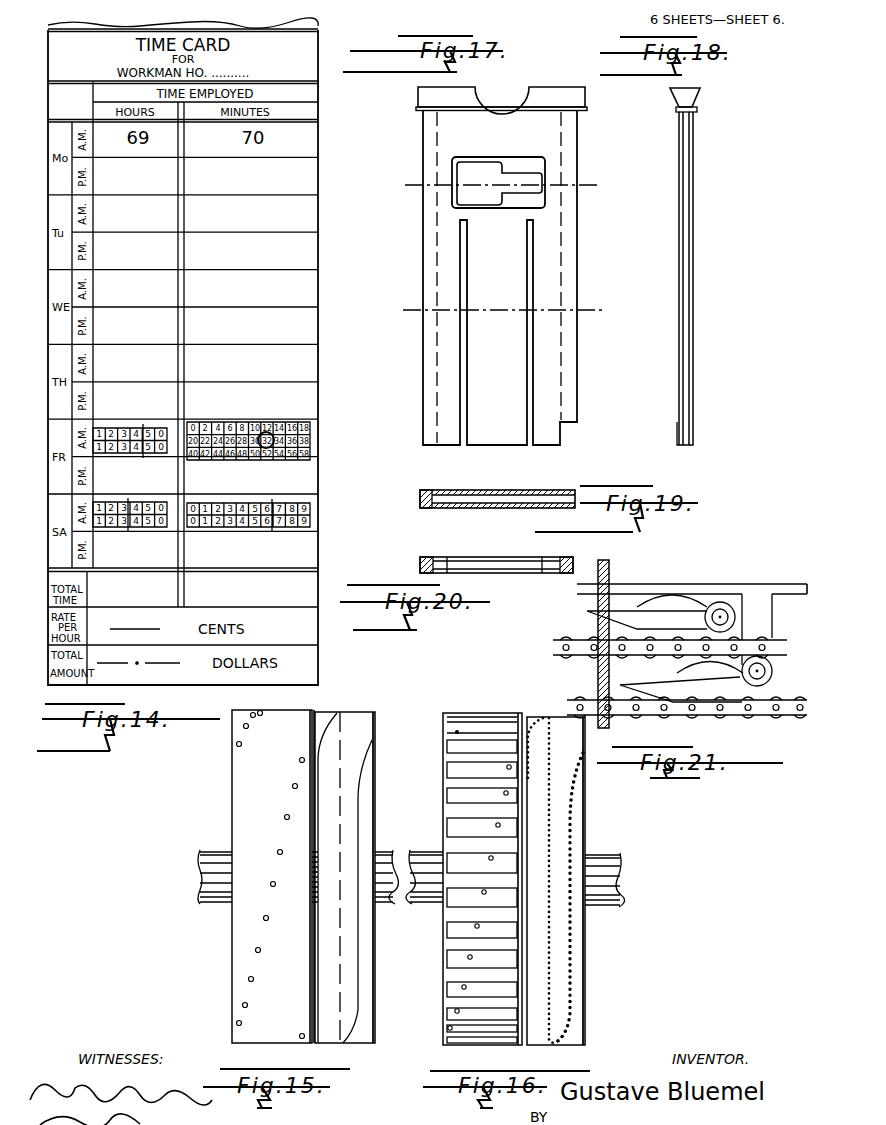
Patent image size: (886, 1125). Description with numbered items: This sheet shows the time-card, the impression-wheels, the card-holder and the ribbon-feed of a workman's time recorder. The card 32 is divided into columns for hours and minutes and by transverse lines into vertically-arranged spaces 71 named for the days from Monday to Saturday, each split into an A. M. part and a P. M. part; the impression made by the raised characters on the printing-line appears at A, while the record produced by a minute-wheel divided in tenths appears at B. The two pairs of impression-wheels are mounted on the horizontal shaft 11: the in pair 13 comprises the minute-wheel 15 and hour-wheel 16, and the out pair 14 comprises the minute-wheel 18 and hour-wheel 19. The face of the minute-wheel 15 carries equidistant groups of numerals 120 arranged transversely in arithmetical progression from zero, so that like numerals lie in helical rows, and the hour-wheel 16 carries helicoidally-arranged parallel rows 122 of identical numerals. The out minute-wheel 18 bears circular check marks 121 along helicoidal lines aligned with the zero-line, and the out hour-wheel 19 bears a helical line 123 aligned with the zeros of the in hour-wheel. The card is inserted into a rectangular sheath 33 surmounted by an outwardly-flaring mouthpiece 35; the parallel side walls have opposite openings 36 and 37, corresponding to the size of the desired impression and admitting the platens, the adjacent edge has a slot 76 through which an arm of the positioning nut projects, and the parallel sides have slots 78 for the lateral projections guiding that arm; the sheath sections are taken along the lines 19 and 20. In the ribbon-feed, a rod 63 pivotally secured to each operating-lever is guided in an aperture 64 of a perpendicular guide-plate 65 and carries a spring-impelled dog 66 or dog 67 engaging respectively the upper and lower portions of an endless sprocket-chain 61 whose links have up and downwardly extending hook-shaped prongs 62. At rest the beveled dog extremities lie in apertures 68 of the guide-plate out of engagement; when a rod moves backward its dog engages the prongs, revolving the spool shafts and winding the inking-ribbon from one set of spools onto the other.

In FIG. 14, the vertically-arranged spaces 71 is at (95, 432).
In FIG. 14, the card 32 is at (316, 370).
In FIG. 14, the impression of raised characters A is at (311, 442).
In FIG. 14, the record produced by minute-wheel divided in tenths B is at (311, 513).
In FIG. 17, the outwardly-flaring mouthpiece 35 is at (565, 98).
In FIG. 18, the outwardly-flaring mouthpiece 35 is at (700, 97).
In FIG. 17, the opening 36 is at (527, 157).
In FIG. 20, the opening 36 is at (500, 573).
In FIG. 17, the opening 37 is at (540, 175).
In FIG. 17, the section line 20 20 is at (505, 186).
In FIG. 17, the hour-recording wheel of out pair 19 is at (504, 313).
In FIG. 15, the hour-recording wheel of out pair 19 is at (345, 877).
In FIG. 17, the sheath 33 is at (500, 277).
In FIG. 18, the sheath 33 is at (690, 203).
In FIG. 19, the sheath 33 is at (428, 490).
In FIG. 20, the sheath 33 is at (492, 557).
In FIG. 17, the slot 78 is at (592, 365).
In FIG. 19, the slot 78 is at (530, 490).
In FIG. 18, the slot 76 is at (688, 335).
In FIG. 19, the slot 76 is at (575, 500).
In FIG. 21, the guide-plate 65 is at (610, 565).
In FIG. 21, the aperture 64 is at (612, 583).
In FIG. 21, the spring-impelled dog 66 is at (686, 617).
In FIG. 21, the rod 63 is at (760, 578).
In FIG. 21, the aperture 68 is at (620, 680).
In FIG. 21, the endless sprocket-chain 61 is at (772, 700).
In FIG. 21, the hook-shaped prongs 62 is at (775, 725).
In FIG. 21, the spring-impelled dog 67 is at (774, 668).
In FIG. 15, the pair of impression-wheels 14 is at (279, 865).
In FIG. 15, the check marks 121 is at (278, 918).
In FIG. 15, the minute-recording wheel of out pair 18 is at (290, 964).
In FIG. 15, the helical line 123 is at (357, 922).
In FIG. 15, the shaft 11 is at (399, 862).
In FIG. 16, the shaft 11 is at (605, 880).
In FIG. 16, the pair of impression-wheels 13 is at (492, 868).
In FIG. 16, the groups of numerals 120 is at (452, 962).
In FIG. 16, the helicoidally-arranged rows of numerals 122 is at (572, 837).
In FIG. 16, the minute-recording wheel of in pair 15 is at (496, 952).
In FIG. 16, the hour-recording wheel of in pair 16 is at (583, 950).